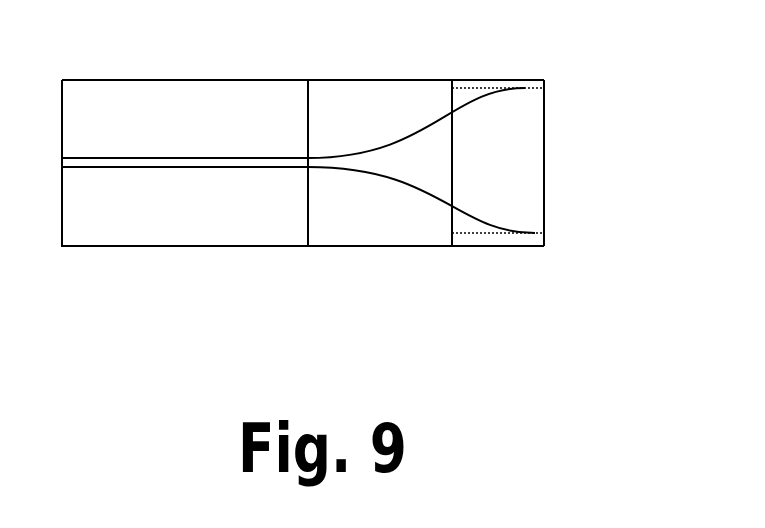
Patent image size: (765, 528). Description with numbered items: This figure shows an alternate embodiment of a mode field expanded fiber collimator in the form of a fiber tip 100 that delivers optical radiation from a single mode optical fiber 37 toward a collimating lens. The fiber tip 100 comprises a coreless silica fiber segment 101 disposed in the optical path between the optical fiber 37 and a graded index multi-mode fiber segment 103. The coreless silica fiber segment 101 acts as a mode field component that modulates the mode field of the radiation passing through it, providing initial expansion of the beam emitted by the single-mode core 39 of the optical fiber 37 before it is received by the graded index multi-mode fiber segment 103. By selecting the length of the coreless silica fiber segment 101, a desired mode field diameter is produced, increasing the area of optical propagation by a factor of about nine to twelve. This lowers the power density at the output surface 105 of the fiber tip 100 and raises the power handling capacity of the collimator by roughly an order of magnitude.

The optical fiber 37 is at (175, 207).
The single-mode core 39 is at (199, 158).
The fiber tip 100 is at (431, 291).
The coreless silica fiber segment 101 is at (380, 87).
The graded index multi-mode fiber segment 103 is at (466, 102).
The output surface 105 is at (546, 188).